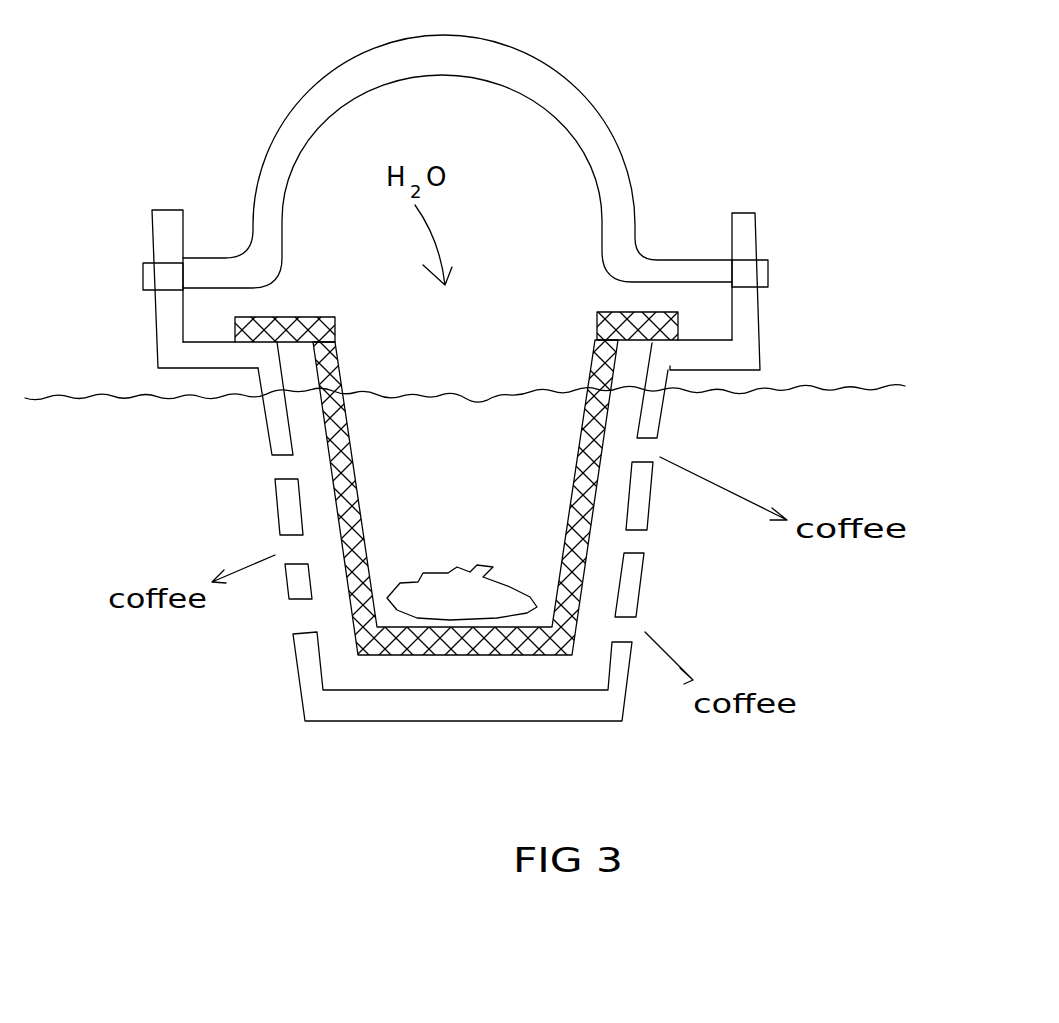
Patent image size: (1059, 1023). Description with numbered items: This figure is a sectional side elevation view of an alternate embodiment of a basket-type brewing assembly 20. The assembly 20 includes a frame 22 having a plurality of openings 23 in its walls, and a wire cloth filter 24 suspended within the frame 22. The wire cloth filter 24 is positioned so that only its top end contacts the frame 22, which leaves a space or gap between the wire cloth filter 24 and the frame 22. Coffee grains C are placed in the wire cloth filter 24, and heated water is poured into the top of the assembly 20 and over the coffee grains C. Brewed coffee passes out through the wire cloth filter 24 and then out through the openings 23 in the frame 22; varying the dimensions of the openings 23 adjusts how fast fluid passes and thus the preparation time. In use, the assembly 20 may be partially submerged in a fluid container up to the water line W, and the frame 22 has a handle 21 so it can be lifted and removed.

The assembly 20 is at (714, 130).
The handle 21 is at (278, 146).
The frame 22 is at (277, 508).
The openings 23 is at (250, 475).
The wire cloth filter 24 is at (593, 410).
The water line W is at (820, 368).
The coffee grains C is at (467, 598).